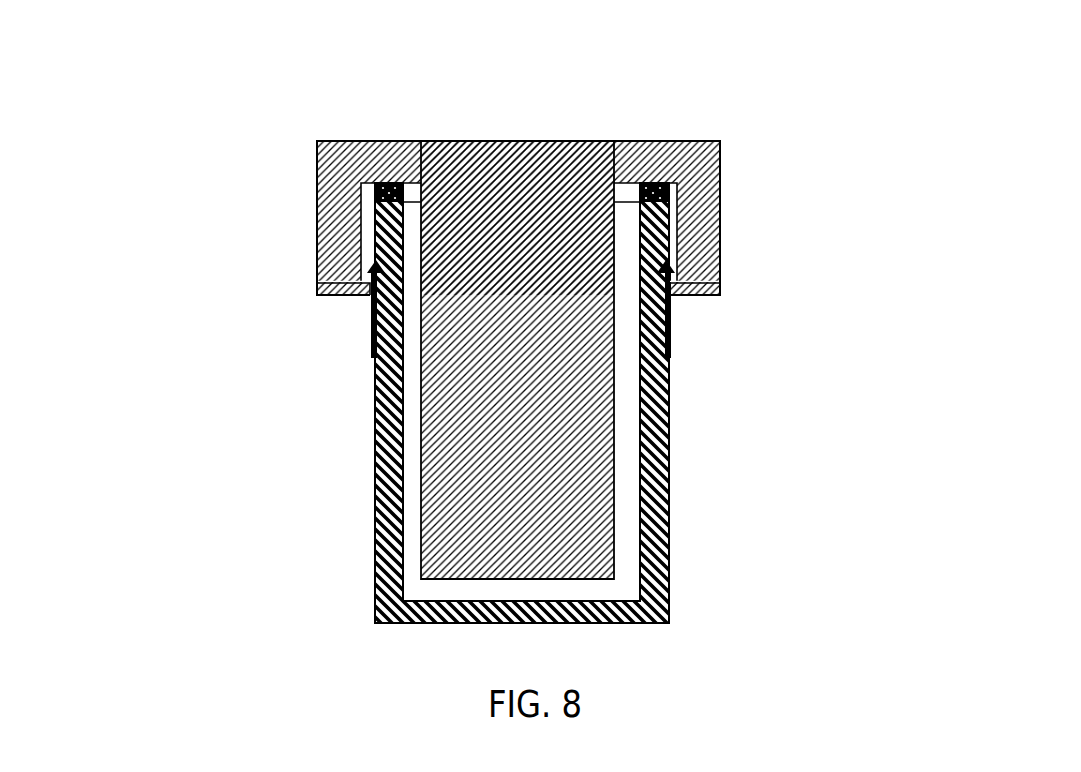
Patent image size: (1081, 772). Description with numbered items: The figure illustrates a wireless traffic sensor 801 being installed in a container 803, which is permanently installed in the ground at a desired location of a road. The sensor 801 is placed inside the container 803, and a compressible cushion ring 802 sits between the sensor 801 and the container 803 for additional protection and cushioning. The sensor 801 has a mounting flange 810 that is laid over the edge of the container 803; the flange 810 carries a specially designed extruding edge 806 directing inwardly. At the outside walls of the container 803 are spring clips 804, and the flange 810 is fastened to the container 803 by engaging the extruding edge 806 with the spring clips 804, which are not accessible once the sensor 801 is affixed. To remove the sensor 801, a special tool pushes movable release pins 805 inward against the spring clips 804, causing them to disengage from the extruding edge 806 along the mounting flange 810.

The wireless traffic sensor 801 is at (485, 207).
The compressible cushion ring 802 is at (658, 185).
The container 803 is at (375, 450).
The spring clip 804 is at (670, 343).
The movable release pin 805 is at (711, 276).
The extruding edge 806 is at (360, 272).
The mounting flange 810 is at (317, 162).